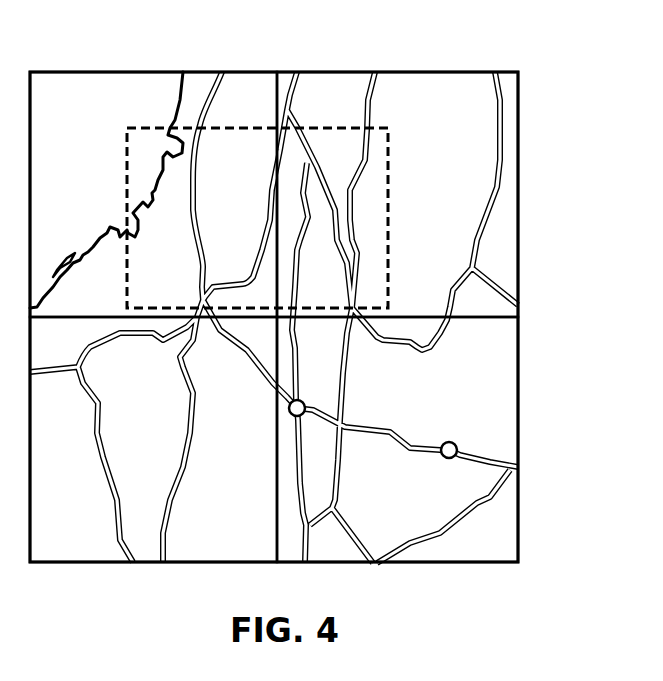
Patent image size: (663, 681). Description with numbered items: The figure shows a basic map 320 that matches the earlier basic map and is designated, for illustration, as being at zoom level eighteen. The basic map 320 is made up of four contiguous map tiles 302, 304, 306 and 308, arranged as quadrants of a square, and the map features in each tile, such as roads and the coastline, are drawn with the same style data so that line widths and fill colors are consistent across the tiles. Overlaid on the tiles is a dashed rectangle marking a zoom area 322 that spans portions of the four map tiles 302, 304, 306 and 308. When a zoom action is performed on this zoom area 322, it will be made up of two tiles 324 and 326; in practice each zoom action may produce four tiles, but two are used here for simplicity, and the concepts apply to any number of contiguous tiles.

The basic map 320 is at (469, 41).
The map tile 302 is at (79, 104).
The map tile 304 is at (318, 104).
The map tile 306 is at (79, 344).
The map tile 308 is at (317, 345).
The zoom area 322 is at (154, 131).
The tile 324 is at (127, 167).
The tile 326 is at (390, 150).